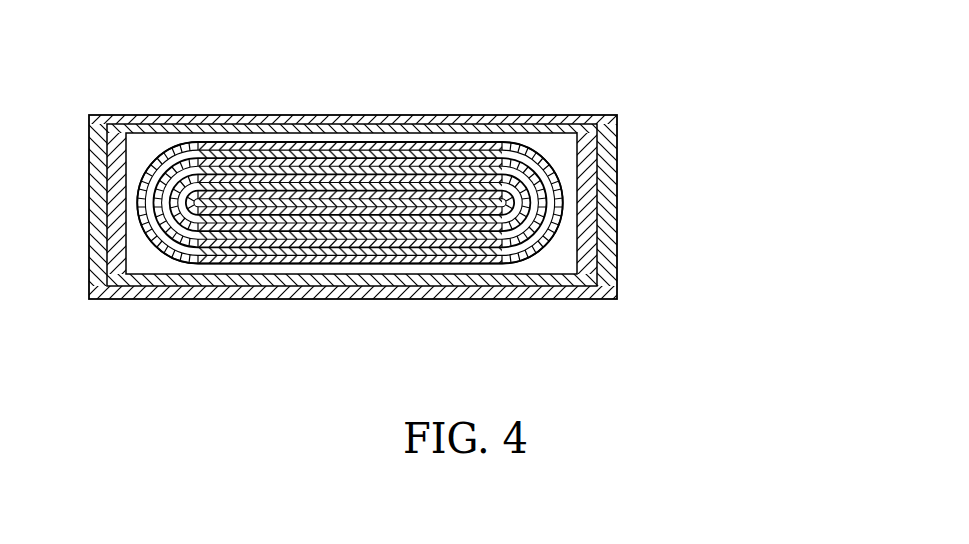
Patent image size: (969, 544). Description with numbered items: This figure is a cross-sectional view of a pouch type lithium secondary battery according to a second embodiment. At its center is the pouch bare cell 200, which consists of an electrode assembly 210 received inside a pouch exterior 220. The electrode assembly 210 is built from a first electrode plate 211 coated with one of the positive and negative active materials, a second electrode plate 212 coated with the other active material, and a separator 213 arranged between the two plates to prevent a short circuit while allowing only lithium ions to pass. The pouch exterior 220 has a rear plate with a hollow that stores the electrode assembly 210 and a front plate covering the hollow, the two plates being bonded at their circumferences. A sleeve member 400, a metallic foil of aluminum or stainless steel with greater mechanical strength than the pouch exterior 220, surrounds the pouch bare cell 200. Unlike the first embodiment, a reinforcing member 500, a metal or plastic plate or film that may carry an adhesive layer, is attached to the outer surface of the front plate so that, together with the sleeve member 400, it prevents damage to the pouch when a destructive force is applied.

The pouch bare cell 200 is at (498, 206).
The electrode assembly 210 is at (464, 201).
The first electrode plate 211 is at (553, 157).
The second electrode plate 212 is at (562, 202).
The separator 213 is at (570, 187).
The pouch exterior 220 is at (612, 247).
The sleeve member 400 is at (363, 115).
The reinforcing member 500 is at (617, 298).